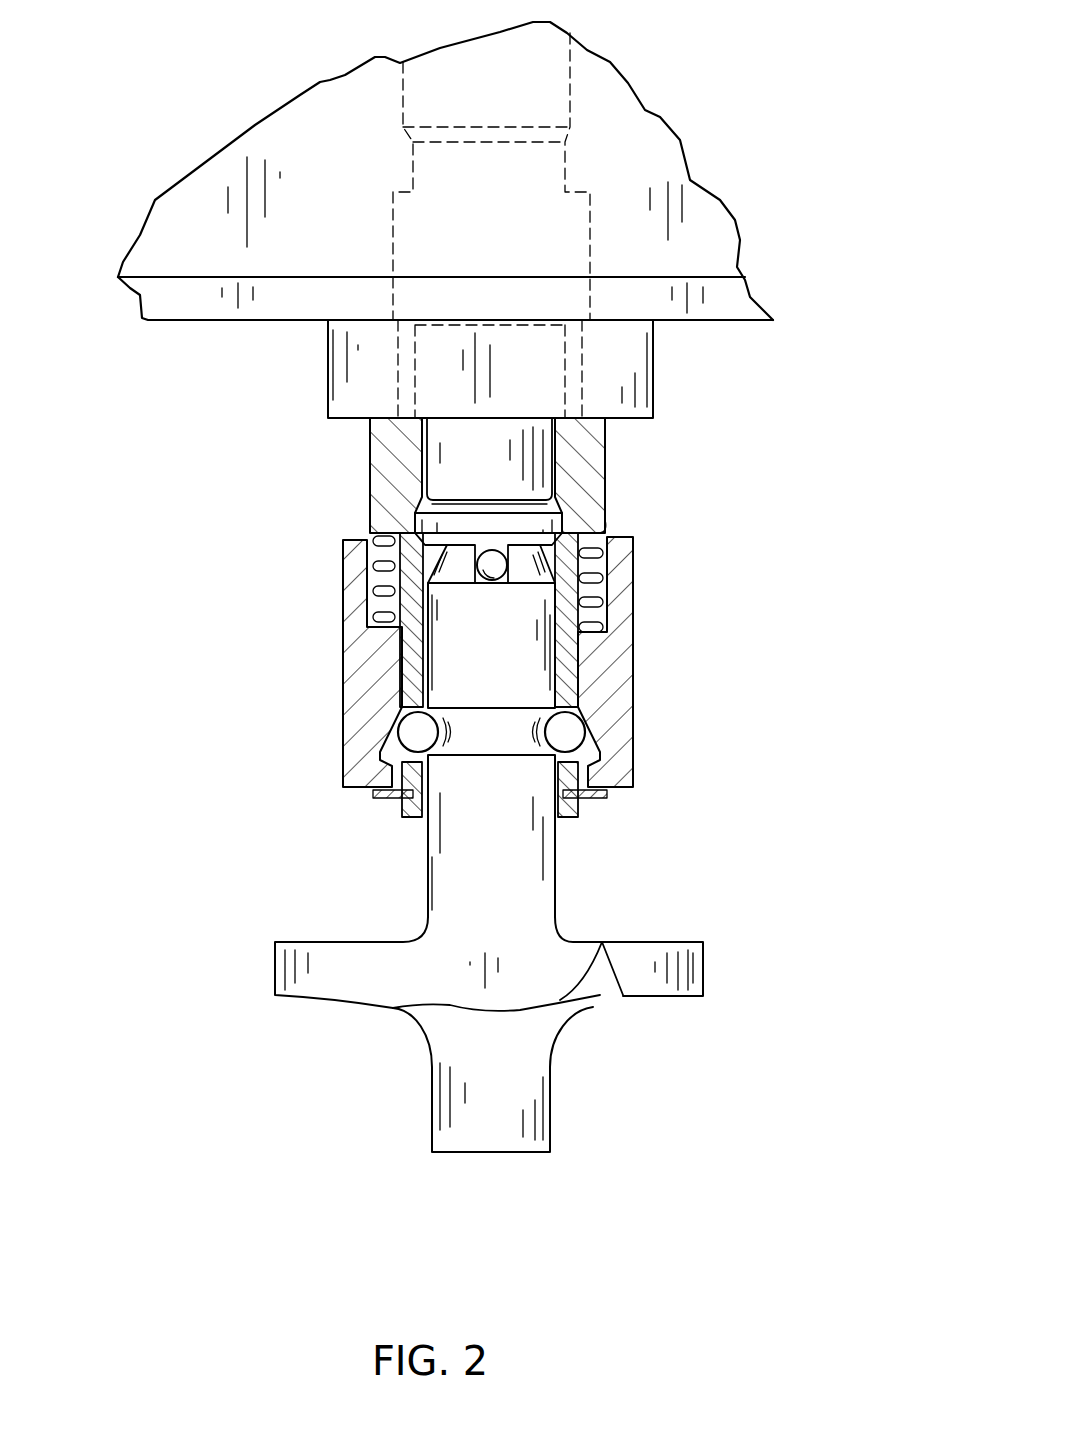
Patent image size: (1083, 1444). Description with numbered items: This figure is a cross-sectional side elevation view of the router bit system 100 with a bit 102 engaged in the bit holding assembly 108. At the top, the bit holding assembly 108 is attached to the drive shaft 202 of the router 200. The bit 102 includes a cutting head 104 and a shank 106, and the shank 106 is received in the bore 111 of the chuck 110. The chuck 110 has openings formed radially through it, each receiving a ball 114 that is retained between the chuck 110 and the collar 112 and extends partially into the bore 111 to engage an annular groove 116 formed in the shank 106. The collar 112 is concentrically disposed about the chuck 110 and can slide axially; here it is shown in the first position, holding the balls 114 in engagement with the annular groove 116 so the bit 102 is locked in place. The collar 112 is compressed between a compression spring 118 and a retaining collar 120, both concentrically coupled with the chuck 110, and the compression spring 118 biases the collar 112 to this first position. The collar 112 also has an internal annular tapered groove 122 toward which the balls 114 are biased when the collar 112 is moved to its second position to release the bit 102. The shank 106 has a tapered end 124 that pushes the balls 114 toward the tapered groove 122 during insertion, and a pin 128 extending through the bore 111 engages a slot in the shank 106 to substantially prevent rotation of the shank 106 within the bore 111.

The router bit system 100 is at (357, 468).
The bit 102 is at (432, 1080).
The cutting head 104 is at (373, 983).
The shank 106 is at (470, 862).
The bit holding assembly 108 is at (343, 700).
The chuck 110 is at (606, 498).
The bore 111 is at (556, 550).
The collar 112 is at (632, 651).
The ball 114 is at (440, 757).
The annular groove 116 is at (500, 733).
The compression spring 118 is at (620, 582).
The retaining collar 120 is at (393, 803).
The internal annular tapered groove 122 is at (367, 791).
The tapered end 124 is at (437, 566).
The pin 128 is at (500, 586).
The router 200 is at (728, 331).
The drive shaft 202 is at (567, 257).